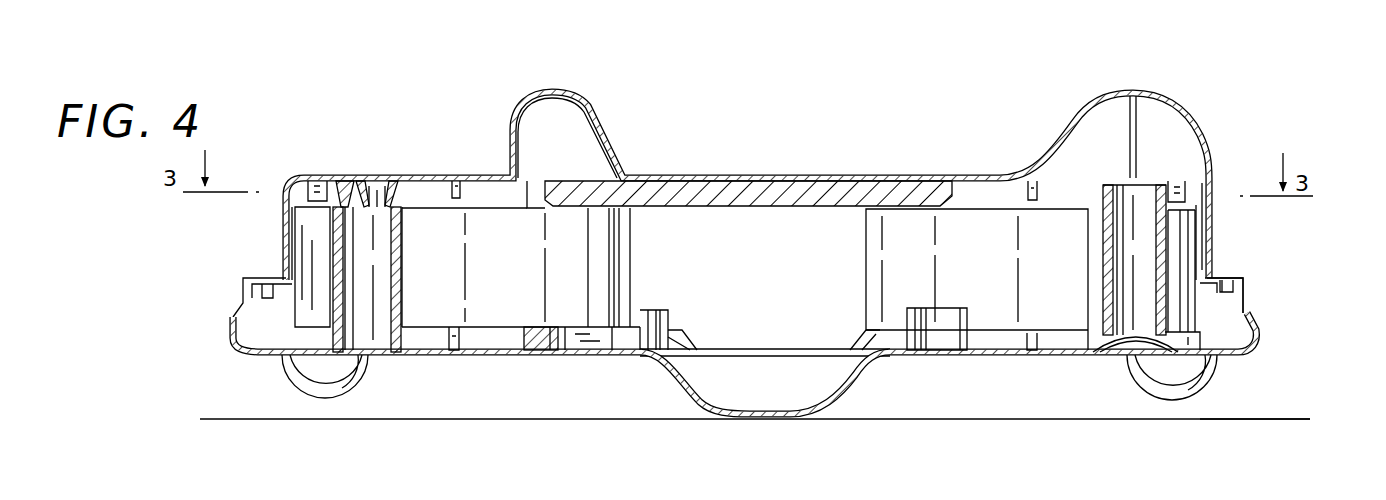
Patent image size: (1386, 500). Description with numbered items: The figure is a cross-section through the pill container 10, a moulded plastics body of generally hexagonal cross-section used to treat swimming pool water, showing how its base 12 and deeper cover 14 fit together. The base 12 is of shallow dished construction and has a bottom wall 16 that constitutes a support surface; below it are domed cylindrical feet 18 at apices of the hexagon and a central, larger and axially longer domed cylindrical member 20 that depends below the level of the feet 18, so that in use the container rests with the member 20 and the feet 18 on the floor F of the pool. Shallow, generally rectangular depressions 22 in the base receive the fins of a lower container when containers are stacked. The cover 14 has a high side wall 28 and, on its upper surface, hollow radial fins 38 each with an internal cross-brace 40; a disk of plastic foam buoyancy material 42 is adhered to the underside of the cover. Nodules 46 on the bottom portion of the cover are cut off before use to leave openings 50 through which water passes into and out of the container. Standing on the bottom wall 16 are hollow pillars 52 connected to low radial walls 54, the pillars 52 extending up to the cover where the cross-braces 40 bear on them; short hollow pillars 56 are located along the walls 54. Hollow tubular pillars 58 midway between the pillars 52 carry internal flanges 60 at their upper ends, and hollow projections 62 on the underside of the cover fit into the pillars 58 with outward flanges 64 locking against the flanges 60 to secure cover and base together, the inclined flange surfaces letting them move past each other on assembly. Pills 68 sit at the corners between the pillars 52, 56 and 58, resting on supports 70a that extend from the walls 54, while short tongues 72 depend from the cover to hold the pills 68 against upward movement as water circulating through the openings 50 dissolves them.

The pill container 10 is at (1277, 134).
The base 12 is at (556, 423).
The cover 14 is at (987, 134).
The bottom wall 16 is at (480, 358).
The domed cylindrical feet 18 is at (362, 374).
The domed cylindrical member 20 is at (822, 389).
The depressions 22 is at (1100, 358).
The side wall 28 is at (1212, 243).
The hollow radial fins 38 is at (577, 121).
The cross-brace 40 is at (1138, 151).
The buoyancy material 42 is at (815, 180).
The nodules 46 is at (243, 291).
The openings 50 is at (243, 341).
The hollow pillars 52 is at (527, 331).
The radial walls 54 is at (692, 337).
The short hollow pillars 56 is at (669, 318).
The hollow tubular pillars 58 is at (402, 298).
The internal flanges 60 is at (342, 183).
The hollow projections 62 is at (375, 183).
The outward flanges 64 is at (297, 218).
The pills 68 is at (631, 278).
The additional supports 70a is at (452, 334).
The short tongues 72 is at (318, 180).
The floor F is at (1300, 419).